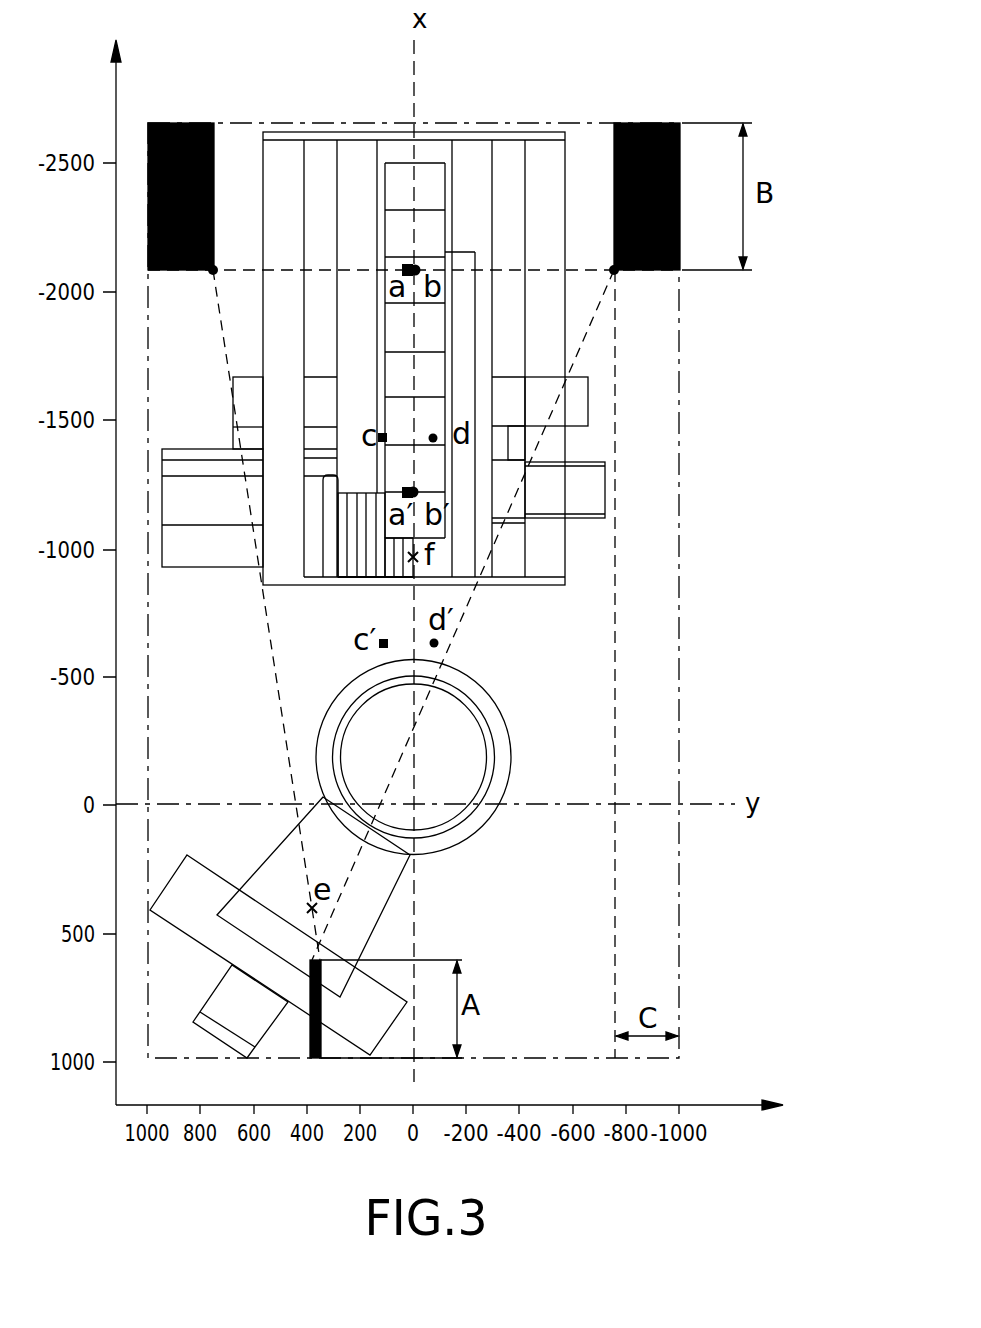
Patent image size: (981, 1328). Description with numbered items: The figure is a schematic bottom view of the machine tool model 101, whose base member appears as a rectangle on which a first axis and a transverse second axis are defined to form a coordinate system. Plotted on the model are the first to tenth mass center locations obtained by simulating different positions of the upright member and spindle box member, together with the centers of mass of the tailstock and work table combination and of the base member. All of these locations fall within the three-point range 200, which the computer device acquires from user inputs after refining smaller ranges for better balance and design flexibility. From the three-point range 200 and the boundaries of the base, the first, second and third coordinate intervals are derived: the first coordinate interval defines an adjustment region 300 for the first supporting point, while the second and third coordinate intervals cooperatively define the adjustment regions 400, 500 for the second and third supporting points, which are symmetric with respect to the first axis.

The machine tool model 101 is at (310, 96).
The three-point range 200 is at (462, 620).
The adjustment region 300 is at (310, 1058).
The adjustment region 400 is at (647, 122).
The adjustment region 500 is at (188, 123).